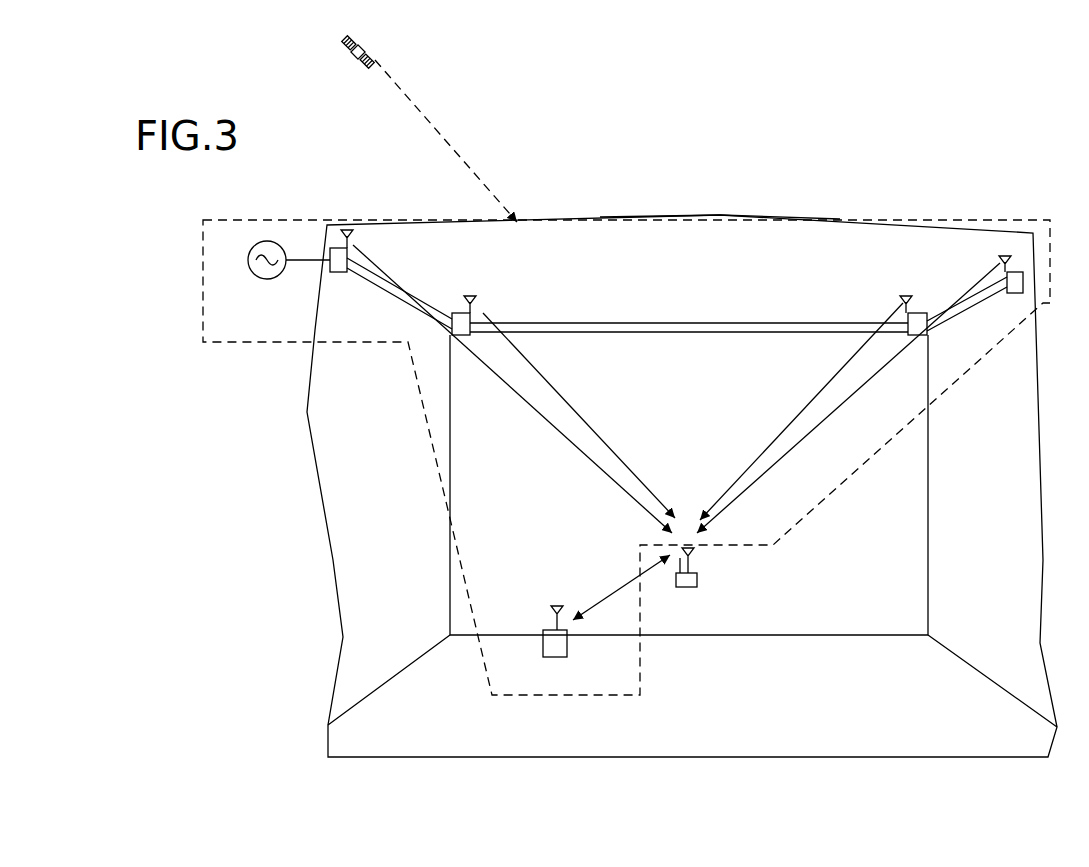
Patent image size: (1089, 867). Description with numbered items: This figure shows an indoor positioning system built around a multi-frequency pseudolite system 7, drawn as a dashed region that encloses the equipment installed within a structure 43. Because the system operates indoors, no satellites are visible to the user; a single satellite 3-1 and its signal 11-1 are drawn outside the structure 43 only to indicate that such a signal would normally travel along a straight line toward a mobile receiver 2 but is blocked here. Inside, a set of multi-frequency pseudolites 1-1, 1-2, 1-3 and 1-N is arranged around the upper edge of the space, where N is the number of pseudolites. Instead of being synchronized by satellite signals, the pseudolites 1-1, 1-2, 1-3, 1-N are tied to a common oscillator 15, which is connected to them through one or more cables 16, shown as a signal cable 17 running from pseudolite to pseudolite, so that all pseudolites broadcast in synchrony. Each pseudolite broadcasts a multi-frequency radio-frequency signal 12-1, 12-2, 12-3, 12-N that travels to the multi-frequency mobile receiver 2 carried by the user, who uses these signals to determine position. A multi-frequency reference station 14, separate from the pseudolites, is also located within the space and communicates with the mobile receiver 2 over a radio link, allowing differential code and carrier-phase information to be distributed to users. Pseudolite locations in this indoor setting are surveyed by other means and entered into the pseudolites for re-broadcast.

The multi-frequency pseudolite system 7 is at (258, 220).
The ground surface 43 is at (722, 215).
The satellite 3-1 is at (376, 52).
The signal 11-1 is at (444, 141).
The cable 16 is at (267, 283).
The reference oscillator signal cable 17 is at (677, 295).
The multi-frequency pseudolite 1-1 is at (409, 251).
The multi-frequency pseudolite 1-2 is at (455, 314).
The multi-frequency pseudolite 1-3 is at (925, 314).
The multi-frequency pseudolite 1-N is at (1006, 263).
The multi-frequency RF signal with communication link 12-1 is at (512, 389).
The multi-frequency RF signal 12-2 is at (579, 415).
The multi-frequency RF signal 12-3 is at (801, 411).
The multi-frequency RF signal 12-N is at (848, 398).
The multi-frequency mobile receiver 2 is at (739, 585).
The oscillator 15 is at (607, 596).
The multi-frequency reference station 14 is at (543, 648).